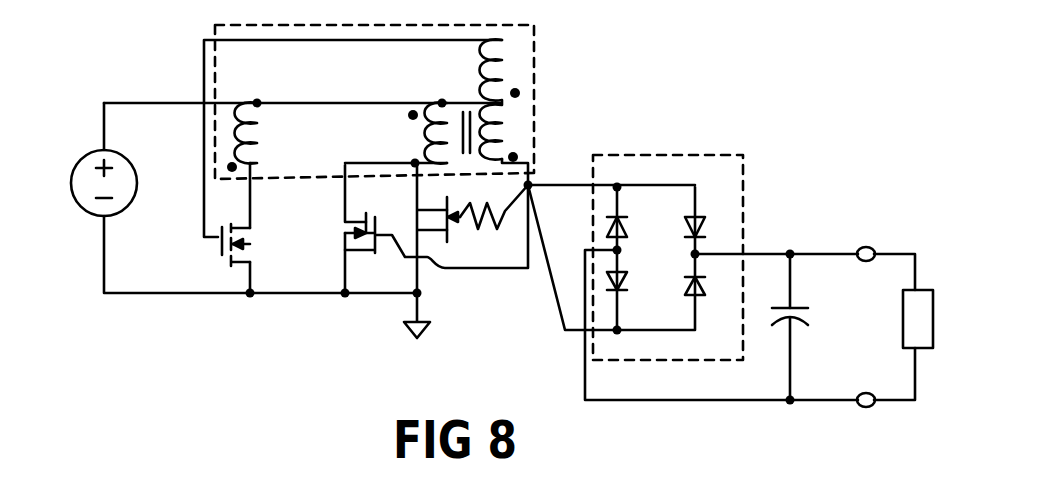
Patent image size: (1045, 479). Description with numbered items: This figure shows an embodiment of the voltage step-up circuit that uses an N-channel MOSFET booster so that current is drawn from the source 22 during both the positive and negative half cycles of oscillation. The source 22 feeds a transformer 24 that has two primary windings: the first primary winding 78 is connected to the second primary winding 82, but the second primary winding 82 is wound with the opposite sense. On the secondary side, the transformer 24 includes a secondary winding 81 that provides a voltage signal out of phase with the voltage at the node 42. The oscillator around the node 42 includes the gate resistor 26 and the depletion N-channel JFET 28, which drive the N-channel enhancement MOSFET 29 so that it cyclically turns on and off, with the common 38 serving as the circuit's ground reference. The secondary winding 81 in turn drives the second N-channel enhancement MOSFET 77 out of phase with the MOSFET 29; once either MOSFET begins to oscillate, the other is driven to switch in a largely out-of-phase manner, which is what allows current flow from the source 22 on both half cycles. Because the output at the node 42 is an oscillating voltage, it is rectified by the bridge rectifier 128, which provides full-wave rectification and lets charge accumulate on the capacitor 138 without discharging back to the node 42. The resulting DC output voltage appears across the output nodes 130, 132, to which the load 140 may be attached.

The source 22 is at (78, 208).
The transformer 24 is at (540, 72).
The gate resistor 26 is at (488, 204).
The depletion N channel JFET 28 is at (452, 237).
The N-channel enhancement MOSFET 29 is at (378, 222).
The common 38 is at (405, 331).
The node 42 is at (535, 180).
The N-channel enhancement MOSFET 77 is at (217, 245).
The first primary side of transformer 78 is at (420, 148).
The secondary winding of transformer 81 is at (477, 60).
The second primary side of transformer 82 is at (262, 132).
The bridge rectifier 128 is at (648, 153).
The output node 130 is at (875, 245).
The output node 132 is at (862, 410).
The capacitor 138 is at (800, 300).
The load 140 is at (900, 320).